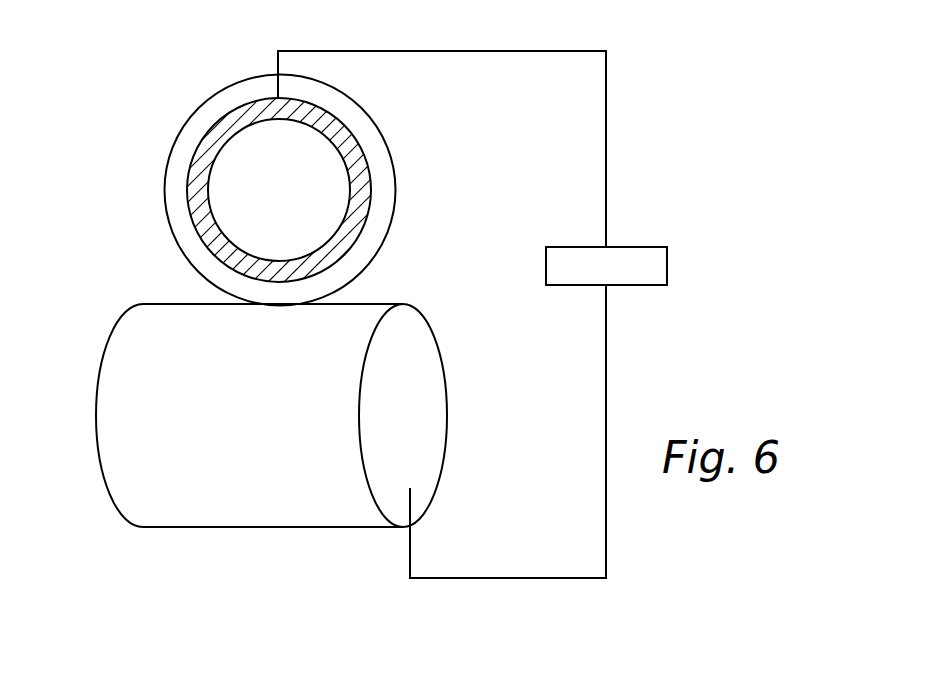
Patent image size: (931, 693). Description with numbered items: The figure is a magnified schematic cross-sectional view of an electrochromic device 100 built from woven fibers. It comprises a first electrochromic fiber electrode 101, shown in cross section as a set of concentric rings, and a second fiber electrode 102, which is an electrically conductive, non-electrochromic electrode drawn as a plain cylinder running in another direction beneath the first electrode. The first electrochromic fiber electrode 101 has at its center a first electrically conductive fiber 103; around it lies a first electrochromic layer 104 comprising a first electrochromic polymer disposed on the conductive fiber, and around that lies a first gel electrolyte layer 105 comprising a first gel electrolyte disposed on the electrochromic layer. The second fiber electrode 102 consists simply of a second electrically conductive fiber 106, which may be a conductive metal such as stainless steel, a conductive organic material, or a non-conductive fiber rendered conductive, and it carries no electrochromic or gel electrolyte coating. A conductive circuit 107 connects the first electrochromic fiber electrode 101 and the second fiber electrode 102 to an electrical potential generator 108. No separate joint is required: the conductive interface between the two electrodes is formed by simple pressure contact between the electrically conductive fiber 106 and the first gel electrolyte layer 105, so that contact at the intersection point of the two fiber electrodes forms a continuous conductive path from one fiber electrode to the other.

The electrochromic device 100 is at (686, 112).
The first electrochromic fiber electrode 101 is at (82, 72).
The second fiber electrode 102 is at (82, 311).
The first electrically conductive fiber 103 is at (308, 192).
The first electrochromic layer 104 is at (200, 168).
The first gel electrolyte layer 105 is at (244, 93).
The second electrically conductive fiber 106 is at (412, 425).
The conductive circuit 107 is at (568, 52).
The electrical potential generator 108 is at (637, 247).